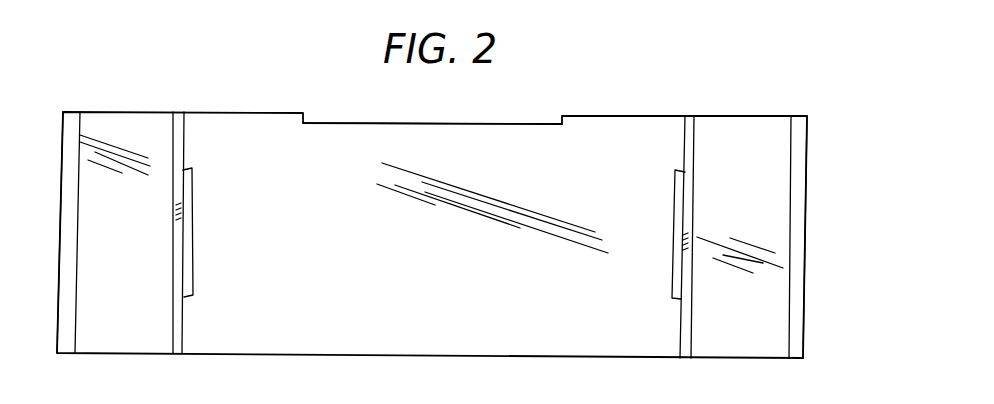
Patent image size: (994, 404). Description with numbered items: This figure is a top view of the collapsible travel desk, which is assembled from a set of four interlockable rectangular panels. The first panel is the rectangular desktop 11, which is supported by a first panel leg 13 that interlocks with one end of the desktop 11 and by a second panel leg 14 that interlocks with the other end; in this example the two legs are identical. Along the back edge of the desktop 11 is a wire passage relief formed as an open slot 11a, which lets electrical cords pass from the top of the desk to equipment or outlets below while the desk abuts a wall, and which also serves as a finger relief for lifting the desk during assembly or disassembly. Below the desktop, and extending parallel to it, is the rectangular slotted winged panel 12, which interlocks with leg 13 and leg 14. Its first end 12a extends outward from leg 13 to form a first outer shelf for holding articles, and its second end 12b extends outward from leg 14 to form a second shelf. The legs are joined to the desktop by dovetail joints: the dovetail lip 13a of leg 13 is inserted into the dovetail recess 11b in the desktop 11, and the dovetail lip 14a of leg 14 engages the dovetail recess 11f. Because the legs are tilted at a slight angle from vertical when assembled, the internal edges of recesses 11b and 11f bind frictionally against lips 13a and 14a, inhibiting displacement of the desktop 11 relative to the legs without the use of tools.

The desktop 11 is at (252, 322).
The open slot 11a is at (335, 122).
The dovetail recess 11b is at (678, 205).
The dovetail recess 11f is at (192, 245).
The winged panel 12 is at (753, 137).
The first end of the winged panel 12a is at (745, 333).
The second end of the winged panel 12b is at (113, 310).
The first panel leg 13 is at (807, 213).
The dovetail lip 13a is at (683, 183).
The second panel leg 14 is at (57, 215).
The dovetail lip 14a is at (185, 202).